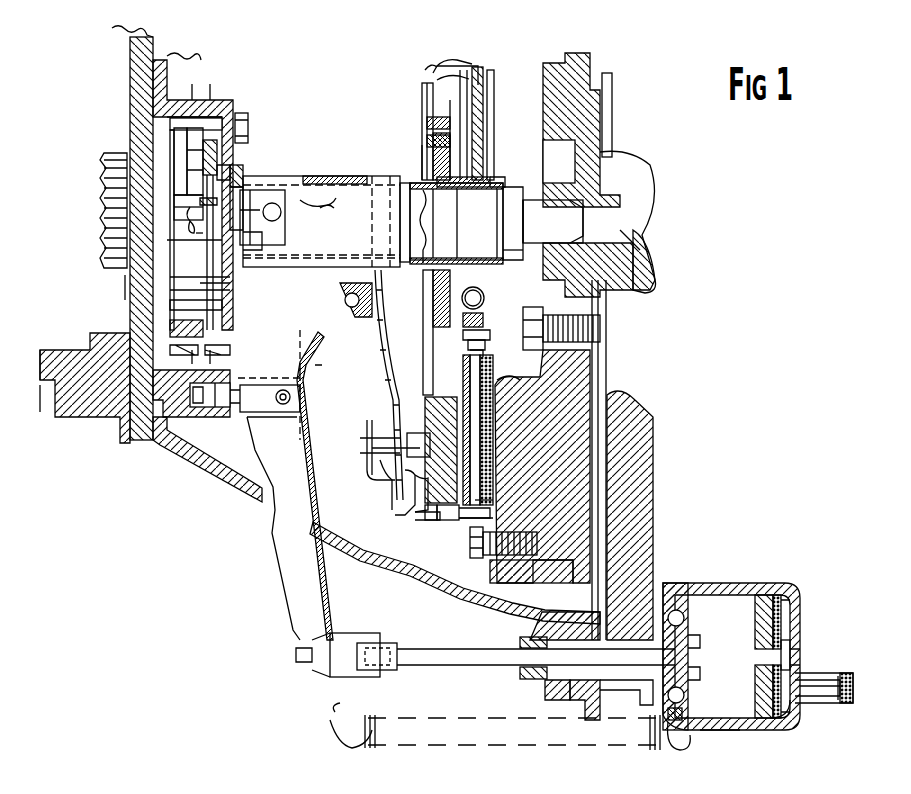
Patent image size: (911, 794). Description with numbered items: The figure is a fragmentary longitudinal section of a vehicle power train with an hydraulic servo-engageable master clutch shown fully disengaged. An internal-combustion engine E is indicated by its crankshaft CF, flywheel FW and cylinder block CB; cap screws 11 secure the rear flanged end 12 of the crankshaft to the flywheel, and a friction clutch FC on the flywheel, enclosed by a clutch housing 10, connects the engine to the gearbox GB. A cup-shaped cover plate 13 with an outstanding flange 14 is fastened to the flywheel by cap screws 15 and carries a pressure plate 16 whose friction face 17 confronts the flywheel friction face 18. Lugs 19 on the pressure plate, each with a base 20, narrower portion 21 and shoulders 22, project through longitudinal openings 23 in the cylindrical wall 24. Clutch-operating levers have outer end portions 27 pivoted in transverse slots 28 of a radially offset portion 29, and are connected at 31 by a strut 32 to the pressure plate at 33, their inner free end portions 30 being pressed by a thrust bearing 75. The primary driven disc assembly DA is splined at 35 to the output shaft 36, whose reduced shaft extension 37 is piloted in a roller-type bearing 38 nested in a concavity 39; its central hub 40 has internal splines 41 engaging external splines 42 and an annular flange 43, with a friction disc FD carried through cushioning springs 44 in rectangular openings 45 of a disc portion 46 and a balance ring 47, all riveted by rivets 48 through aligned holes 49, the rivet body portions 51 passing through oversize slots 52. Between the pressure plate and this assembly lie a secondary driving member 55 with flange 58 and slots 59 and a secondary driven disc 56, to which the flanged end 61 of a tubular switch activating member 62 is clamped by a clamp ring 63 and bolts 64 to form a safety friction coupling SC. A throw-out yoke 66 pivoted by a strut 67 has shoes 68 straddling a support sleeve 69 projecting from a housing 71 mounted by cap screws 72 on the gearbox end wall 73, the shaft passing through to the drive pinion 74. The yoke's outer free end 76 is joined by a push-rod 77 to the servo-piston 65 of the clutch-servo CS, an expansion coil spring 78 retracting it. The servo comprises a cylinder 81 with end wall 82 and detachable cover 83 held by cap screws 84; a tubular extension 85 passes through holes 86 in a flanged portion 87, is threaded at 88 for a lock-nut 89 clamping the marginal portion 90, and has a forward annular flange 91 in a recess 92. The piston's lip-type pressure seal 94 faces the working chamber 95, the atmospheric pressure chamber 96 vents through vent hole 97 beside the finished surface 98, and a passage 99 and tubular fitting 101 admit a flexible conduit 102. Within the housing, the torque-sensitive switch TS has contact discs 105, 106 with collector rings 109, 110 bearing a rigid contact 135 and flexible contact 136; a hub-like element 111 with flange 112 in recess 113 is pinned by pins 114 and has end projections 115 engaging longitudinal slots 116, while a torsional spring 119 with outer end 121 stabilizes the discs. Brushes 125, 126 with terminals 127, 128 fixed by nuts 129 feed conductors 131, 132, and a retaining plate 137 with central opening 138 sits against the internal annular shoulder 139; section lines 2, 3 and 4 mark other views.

The gearbox end wall 73 is at (154, 34).
The torque-sensitive switch TS is at (203, 62).
The section line 2 is at (192, 84).
The section line 3 is at (210, 90).
The collector ring 109 is at (196, 108).
The cup-shaped housing 71 is at (222, 110).
The collector ring 110 is at (243, 112).
The internal annular shoulder 139 is at (170, 128).
The contact disc element 105 is at (187, 142).
The contact disc element 106 is at (200, 151).
The cap screws 72 is at (248, 125).
The complemental recess 113 is at (217, 155).
The torsional wrap spring 119 is at (218, 165).
The circular flange 112 is at (226, 172).
The pins 114 is at (190, 192).
The drive pinion 74 is at (103, 174).
The hub-like element 111 is at (245, 172).
The support sleeve 69 is at (338, 175).
The rigid contact 135 is at (180, 212).
The flexible contact 136 is at (180, 233).
The central opening 138 is at (160, 242).
The end projections 115 is at (263, 217).
The longitudinal slots 116 is at (263, 241).
The shoes 68 is at (305, 238).
The tubular switch activating member 62 is at (433, 268).
The clutch output shaft 36 is at (440, 221).
The bearing and oil retaining plate 137 is at (125, 292).
The gearbox GB is at (82, 320).
The outer end of spring 121 is at (240, 283).
The brush 126 is at (235, 295).
The brush 125 is at (172, 305).
The nuts 129 is at (170, 337).
The insulated threaded terminal 128 is at (232, 348).
The insulated threaded terminal 127 is at (170, 352).
The clutch housing 10 is at (200, 452).
The electrical conductor 131 is at (205, 408).
The strut 67 is at (277, 418).
The electrical conductor 132 is at (300, 440).
The throw-out yoke 66 is at (274, 528).
The thrust bearing 75 is at (345, 315).
The inner free end portions 30 is at (390, 240).
The portion of disc 46 is at (451, 223).
The external splines 42 is at (432, 195).
The internal splines 41 is at (460, 188).
The central hub 40 is at (500, 178).
The splined formation 35 is at (512, 187).
The reduced shaft extension 37 is at (535, 198).
The roller-type bearing 38 is at (525, 250).
The horizontal flange 58 is at (422, 95).
The secondary driven disc 56 is at (433, 80).
The secondary driving member 55 is at (450, 60).
The longitudinal slots 59 is at (428, 66).
The balance ring 47 is at (478, 66).
The annular outstanding flange 43 is at (494, 112).
The friction clutch FC is at (408, 62).
The primary clutch driven disc assembly DA is at (500, 105).
The safety friction coupling SC is at (420, 160).
The clamp ring 63 is at (427, 120).
The bolts 64 is at (427, 140).
The section line 4 is at (440, 112).
The flanged end 61 is at (433, 280).
The cushioning springs 44 is at (482, 288).
The rectangular openings 45 is at (483, 313).
The rivets 48 is at (490, 334).
The aligned holes 49 is at (485, 345).
The oversize slots 52 is at (483, 354).
The friction face 18 is at (508, 383).
The rivet body portions 51 is at (470, 352).
The pressure plate 16 is at (405, 400).
The friction face 17 is at (447, 468).
The strut connection on pressure plate 33 is at (440, 430).
The cover plate 13 is at (360, 410).
The strut 32 is at (370, 437).
The pivotal connection 31 is at (380, 452).
The transverse slots 28 is at (390, 485).
The outer end portions 27 is at (395, 500).
The radially offset portion 29 is at (412, 505).
The lugs 19 is at (415, 515).
The lug base 20 is at (430, 520).
The narrower portion 21 is at (445, 522).
The shoulders 22 is at (462, 520).
The cap screws 15 is at (470, 556).
The annular outstanding flange 14 is at (490, 566).
The friction disc FD is at (510, 440).
The cylindrical wall 24 is at (490, 500).
The longitudinal openings 23 is at (490, 518).
The cap screws 11 is at (600, 328).
The flywheel FW is at (600, 370).
The cylinder block CB is at (658, 433).
The internal-combustion engine E is at (620, 112).
The rear flanged end 12 is at (612, 84).
The crankshaft CF is at (628, 222).
The concavity 39 is at (625, 225).
The piston push-rod 77 is at (443, 648).
The flanged portion 87 is at (572, 612).
The externally threaded portion 88 is at (528, 638).
The cylindrical tubular extension 85 is at (522, 672).
The lock-nut 89 is at (545, 688).
The coaxial longitudinal holes 86 is at (585, 700).
The marginal portion of servo cover 90 is at (640, 690).
The outer free end of yoke 76 is at (345, 745).
The expansion coil spring 78 is at (395, 738).
The clutch-servo CS is at (770, 738).
The cap screws 84 is at (670, 582).
The detachable cover 83 is at (684, 618).
The forward annular flange 91 is at (690, 640).
The complemental recess 92 is at (690, 680).
The vent hole 97 is at (684, 695).
The inner finished surface 98 is at (685, 722).
The lip-type pressure seal 94 is at (765, 595).
The atmospheric pressure chamber 96 is at (745, 590).
The servo-piston 65 is at (790, 632).
The integrated end wall 82 is at (800, 655).
The cylinder 81 is at (735, 732).
The variable working chamber 95 is at (785, 722).
The flexible conduit 102 is at (853, 680).
The passage 99 is at (808, 700).
The rigid tubular fitting 101 is at (840, 700).